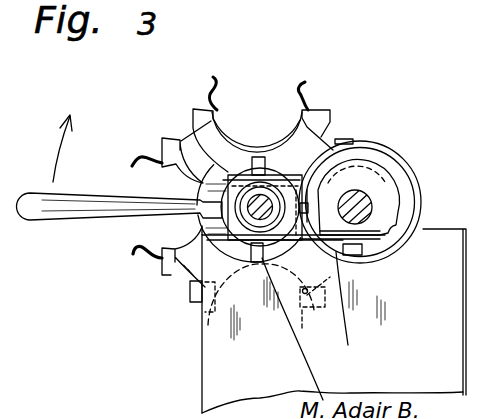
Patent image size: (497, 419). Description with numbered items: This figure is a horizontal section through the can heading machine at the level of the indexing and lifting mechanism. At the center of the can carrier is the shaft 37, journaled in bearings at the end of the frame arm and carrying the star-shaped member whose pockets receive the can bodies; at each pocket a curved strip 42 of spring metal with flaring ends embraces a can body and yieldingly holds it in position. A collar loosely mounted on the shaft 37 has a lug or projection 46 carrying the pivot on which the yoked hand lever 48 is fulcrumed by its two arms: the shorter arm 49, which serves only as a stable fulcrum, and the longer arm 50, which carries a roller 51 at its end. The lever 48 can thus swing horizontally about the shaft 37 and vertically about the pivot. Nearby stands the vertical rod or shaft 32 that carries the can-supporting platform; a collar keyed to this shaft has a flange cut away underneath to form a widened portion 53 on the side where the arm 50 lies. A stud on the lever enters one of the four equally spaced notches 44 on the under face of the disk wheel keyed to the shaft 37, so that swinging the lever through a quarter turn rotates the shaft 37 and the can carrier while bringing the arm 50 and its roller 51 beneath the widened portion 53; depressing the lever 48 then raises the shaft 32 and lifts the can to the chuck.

The vertical rod or shaft 32 is at (372, 201).
The shaft 37 is at (252, 213).
The curved strip of spring metal 42 is at (307, 87).
The notches or recesses 44 is at (264, 172).
The lug or projection 46 is at (302, 190).
The yoked hand lever 48 is at (72, 203).
The shorter arm 49 is at (250, 175).
The longer arm 50 is at (352, 313).
The roller 51 is at (352, 262).
The widened portion of the flange 53 is at (365, 240).